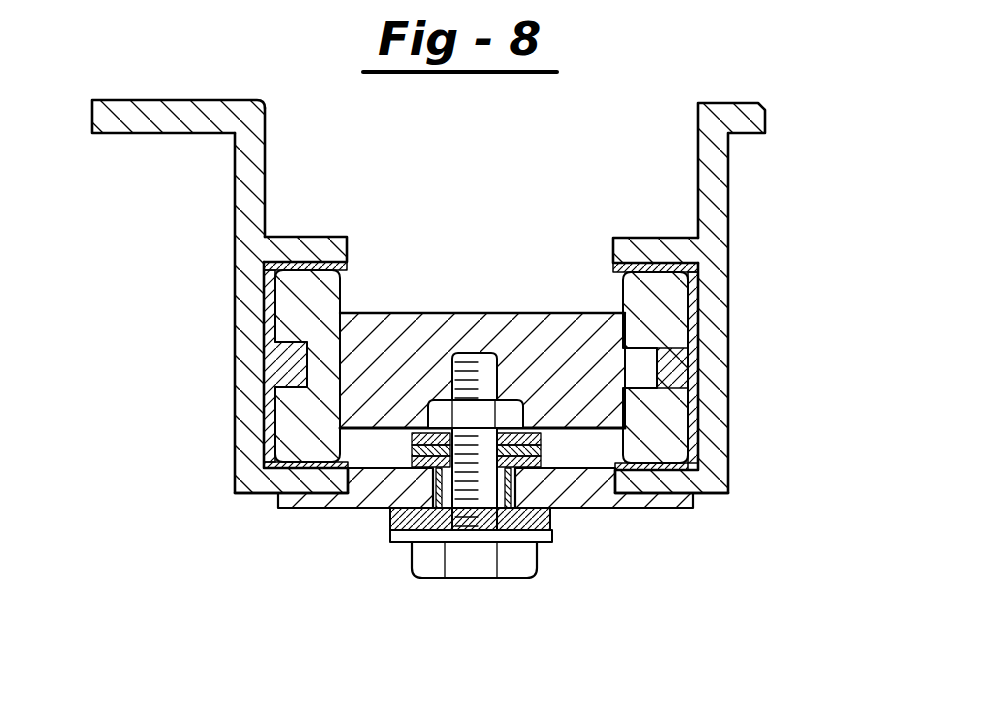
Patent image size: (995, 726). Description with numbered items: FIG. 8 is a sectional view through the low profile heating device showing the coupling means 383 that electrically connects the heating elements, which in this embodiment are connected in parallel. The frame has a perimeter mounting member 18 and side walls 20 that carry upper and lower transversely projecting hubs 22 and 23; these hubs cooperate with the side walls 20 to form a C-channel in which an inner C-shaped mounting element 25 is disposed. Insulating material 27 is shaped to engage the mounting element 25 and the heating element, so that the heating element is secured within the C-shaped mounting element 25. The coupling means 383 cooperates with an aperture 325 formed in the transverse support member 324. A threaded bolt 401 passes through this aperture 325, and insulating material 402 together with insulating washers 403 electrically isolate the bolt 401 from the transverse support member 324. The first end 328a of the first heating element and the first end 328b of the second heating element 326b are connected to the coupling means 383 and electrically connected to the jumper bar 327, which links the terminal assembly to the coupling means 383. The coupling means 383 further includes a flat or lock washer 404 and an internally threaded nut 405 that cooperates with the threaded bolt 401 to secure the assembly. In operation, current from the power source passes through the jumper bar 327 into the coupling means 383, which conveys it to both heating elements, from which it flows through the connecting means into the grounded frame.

The perimeter mounting member 18 is at (147, 123).
The side walls 20 is at (253, 183).
The upper transversely projecting hub 22 is at (328, 250).
The lower transversely projecting hub 23 is at (263, 495).
The inner C-shaped mounting element 25 is at (697, 377).
The insulating material 27 is at (673, 313).
The transverse support member 324 is at (590, 498).
The aperture 325 is at (517, 500).
The second heating element 326b is at (432, 327).
The jumper bar 327 is at (392, 520).
The first end of first heating element 328a is at (520, 440).
The first end of second heating element 328b is at (528, 462).
The coupling means 383 is at (432, 602).
The threaded bolt 401 is at (475, 562).
The insulating material 402 is at (555, 510).
The insulating washers 403 is at (395, 508).
The flat or lock washer 404 is at (525, 400).
The internally threaded nut 405 is at (440, 400).